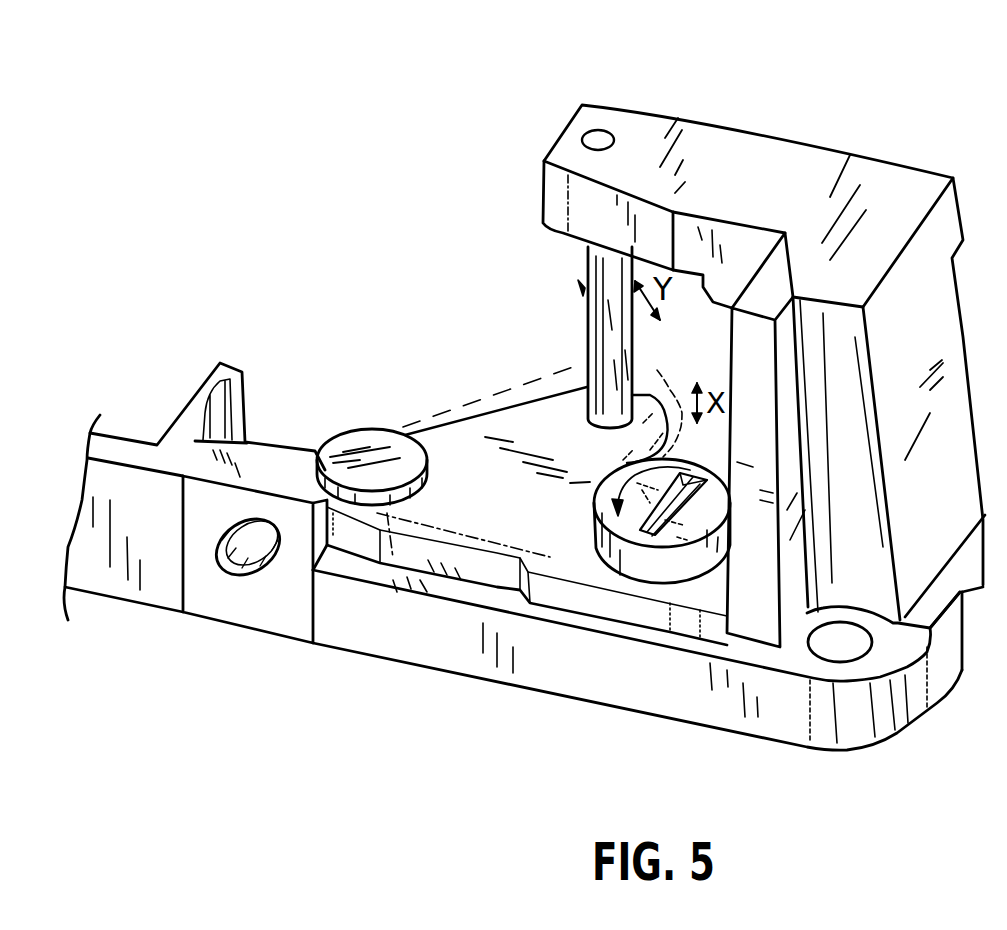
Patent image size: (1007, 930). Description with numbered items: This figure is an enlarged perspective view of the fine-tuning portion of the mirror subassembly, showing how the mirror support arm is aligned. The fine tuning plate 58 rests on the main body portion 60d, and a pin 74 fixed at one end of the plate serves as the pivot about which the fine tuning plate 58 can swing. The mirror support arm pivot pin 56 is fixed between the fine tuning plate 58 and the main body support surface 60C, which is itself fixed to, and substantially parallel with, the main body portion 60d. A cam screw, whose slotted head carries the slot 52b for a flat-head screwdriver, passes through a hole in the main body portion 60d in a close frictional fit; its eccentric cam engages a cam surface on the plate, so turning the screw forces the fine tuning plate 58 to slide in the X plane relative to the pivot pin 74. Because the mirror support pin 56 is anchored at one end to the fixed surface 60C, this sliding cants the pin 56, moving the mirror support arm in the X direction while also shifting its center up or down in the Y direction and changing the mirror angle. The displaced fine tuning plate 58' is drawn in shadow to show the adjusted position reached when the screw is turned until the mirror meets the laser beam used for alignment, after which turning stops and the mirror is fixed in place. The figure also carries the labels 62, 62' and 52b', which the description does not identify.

The mirror support arm pivot pin 56 is at (603, 135).
The main body support surface 60C is at (763, 329).
The main body portion 60d is at (400, 637).
The pin 62 is at (567, 301).
The pin in alternate position 62' is at (671, 321).
The pin 74 is at (357, 443).
The fine tuning plate 58 is at (527, 566).
The displaced fine tuning plate 58' is at (529, 438).
The slot 52b is at (633, 615).
The slot in pivot cylinder 52b' is at (667, 622).